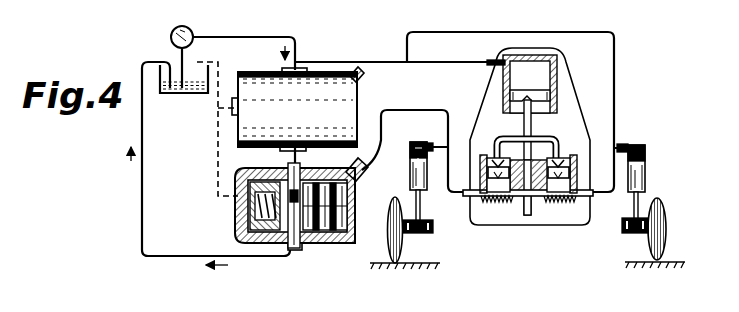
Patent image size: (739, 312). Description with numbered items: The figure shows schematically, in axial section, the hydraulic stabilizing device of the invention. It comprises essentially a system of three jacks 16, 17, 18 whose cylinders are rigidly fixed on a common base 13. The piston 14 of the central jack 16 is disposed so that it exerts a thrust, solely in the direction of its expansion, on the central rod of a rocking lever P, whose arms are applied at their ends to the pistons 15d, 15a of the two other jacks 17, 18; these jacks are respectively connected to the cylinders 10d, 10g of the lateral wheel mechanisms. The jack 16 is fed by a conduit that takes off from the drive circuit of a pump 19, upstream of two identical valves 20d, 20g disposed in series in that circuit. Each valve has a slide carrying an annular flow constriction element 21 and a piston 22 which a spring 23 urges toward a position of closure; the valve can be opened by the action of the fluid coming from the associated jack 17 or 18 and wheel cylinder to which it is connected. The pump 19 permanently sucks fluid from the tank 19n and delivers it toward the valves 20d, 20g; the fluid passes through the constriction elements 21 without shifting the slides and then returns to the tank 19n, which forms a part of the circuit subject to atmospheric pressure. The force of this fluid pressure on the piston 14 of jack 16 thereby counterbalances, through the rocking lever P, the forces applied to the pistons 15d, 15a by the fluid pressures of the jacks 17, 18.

The pump 19 is at (172, 33).
The tank 19n is at (180, 94).
The valve 20d is at (364, 116).
The valve 20g is at (288, 231).
The annular flow constriction element 21 is at (299, 248).
The piston 22 is at (340, 193).
The spring 23 is at (240, 216).
The cylinder 10g is at (410, 152).
The cylinder 10d is at (646, 151).
The base 13 is at (574, 106).
The piston 14 is at (506, 86).
The jack 16 is at (544, 82).
The rocking lever P is at (498, 148).
The valve 15a is at (484, 168).
The piston 15d is at (577, 161).
The jack 17 is at (560, 203).
The jack 18 is at (497, 203).